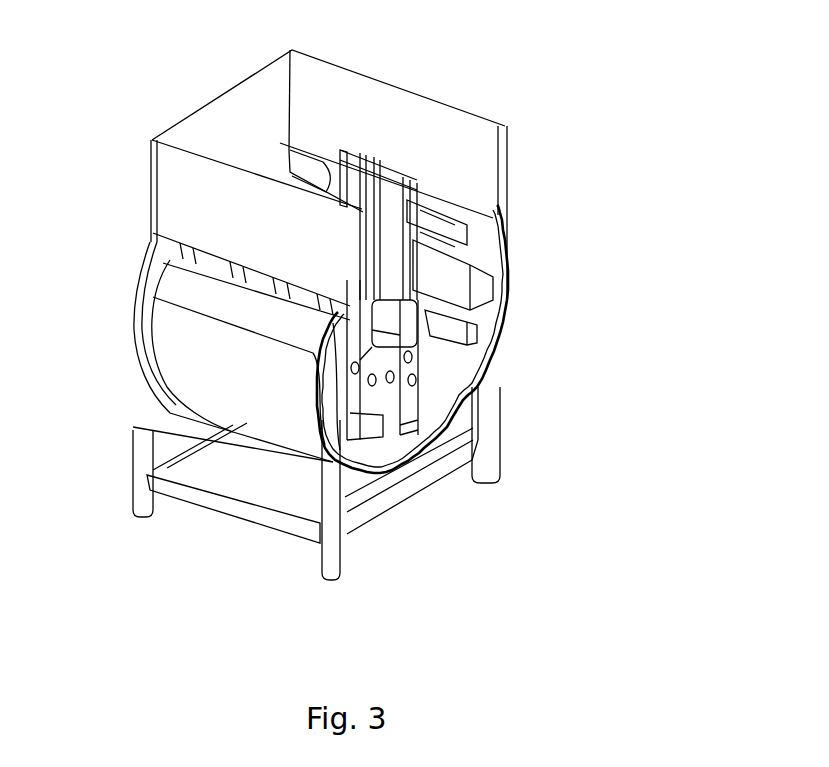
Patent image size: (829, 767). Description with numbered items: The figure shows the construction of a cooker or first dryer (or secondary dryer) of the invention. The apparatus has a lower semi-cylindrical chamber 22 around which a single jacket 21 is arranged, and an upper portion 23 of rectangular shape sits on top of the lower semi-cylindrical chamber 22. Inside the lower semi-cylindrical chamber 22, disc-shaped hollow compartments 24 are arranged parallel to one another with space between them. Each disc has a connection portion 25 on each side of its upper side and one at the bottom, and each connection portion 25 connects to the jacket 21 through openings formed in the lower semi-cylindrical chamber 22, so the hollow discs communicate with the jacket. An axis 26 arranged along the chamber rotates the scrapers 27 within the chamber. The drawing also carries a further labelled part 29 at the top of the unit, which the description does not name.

The jacket 21 is at (198, 378).
The lower semi-cylindrical chamber 22 is at (133, 303).
The upper portion 23 is at (143, 170).
The disc-shaped hollow compartments 24 is at (362, 468).
The connection portion 25 is at (505, 215).
The axis 26 is at (456, 335).
The scrapers 27 is at (421, 365).
The mounting bracket 29 is at (377, 170).